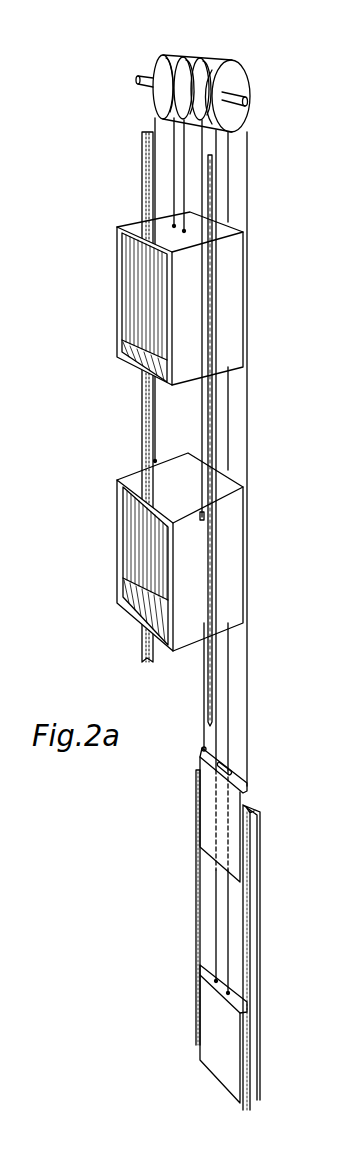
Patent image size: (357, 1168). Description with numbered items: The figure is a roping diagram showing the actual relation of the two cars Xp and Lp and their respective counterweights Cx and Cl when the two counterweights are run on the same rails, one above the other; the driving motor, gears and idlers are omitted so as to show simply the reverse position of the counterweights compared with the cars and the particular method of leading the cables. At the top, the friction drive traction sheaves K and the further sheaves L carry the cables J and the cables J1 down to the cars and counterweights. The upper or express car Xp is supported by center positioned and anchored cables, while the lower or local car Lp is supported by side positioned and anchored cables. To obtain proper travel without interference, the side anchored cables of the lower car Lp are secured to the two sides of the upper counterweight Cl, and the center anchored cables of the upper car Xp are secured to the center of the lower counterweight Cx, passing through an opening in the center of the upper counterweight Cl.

The friction drive traction sheaves K is at (187, 66).
The deflection pulley L is at (165, 75).
The cables J is at (204, 452).
The hoisting rope (second set) J1 is at (201, 556).
The express or upper car Xp is at (232, 309).
The local or lower car Lp is at (233, 562).
The upper counterweight Cl is at (242, 797).
The lower counterweight Cx is at (240, 1017).